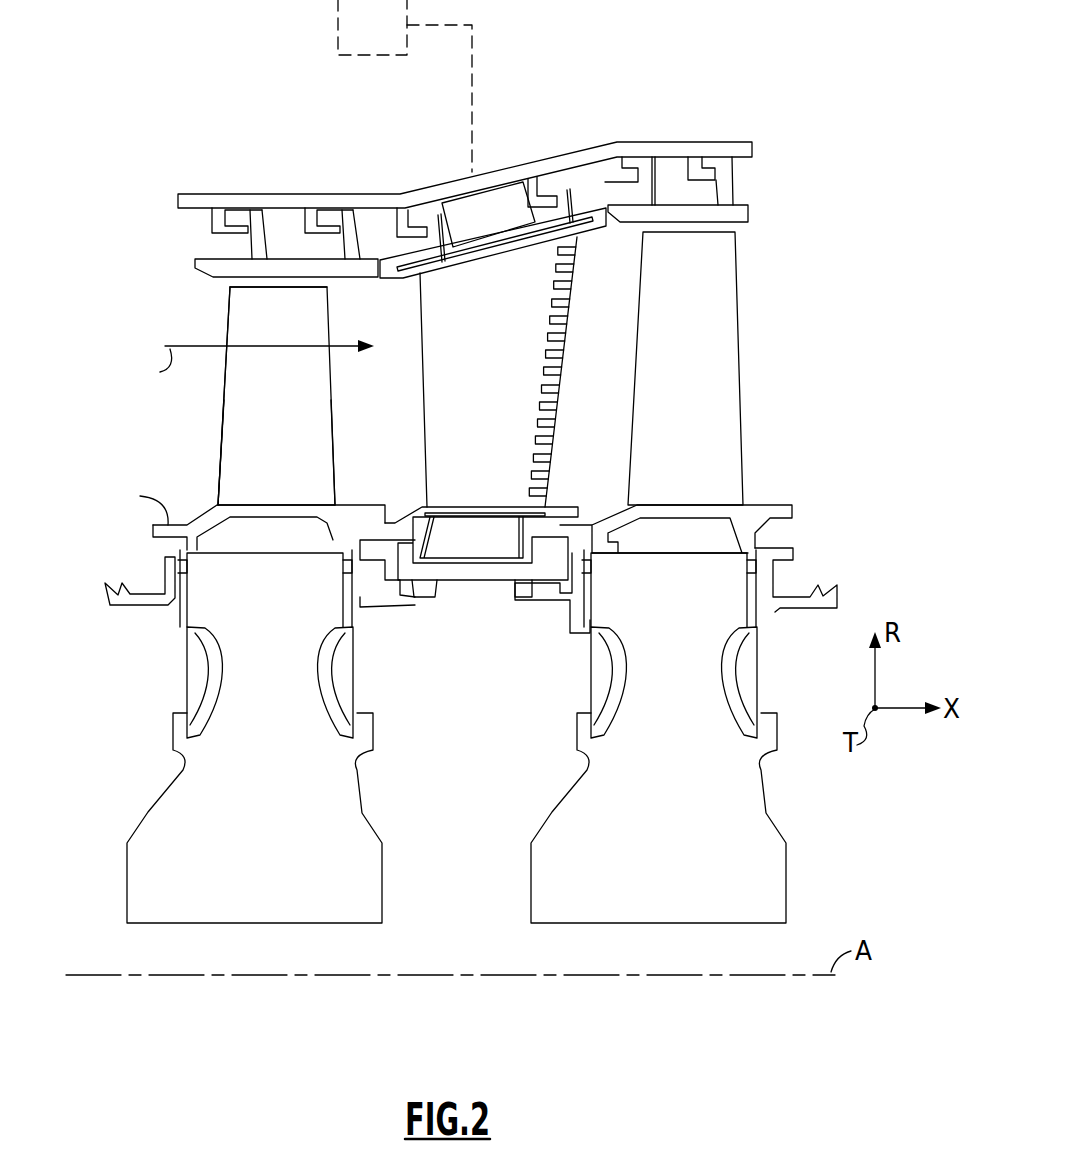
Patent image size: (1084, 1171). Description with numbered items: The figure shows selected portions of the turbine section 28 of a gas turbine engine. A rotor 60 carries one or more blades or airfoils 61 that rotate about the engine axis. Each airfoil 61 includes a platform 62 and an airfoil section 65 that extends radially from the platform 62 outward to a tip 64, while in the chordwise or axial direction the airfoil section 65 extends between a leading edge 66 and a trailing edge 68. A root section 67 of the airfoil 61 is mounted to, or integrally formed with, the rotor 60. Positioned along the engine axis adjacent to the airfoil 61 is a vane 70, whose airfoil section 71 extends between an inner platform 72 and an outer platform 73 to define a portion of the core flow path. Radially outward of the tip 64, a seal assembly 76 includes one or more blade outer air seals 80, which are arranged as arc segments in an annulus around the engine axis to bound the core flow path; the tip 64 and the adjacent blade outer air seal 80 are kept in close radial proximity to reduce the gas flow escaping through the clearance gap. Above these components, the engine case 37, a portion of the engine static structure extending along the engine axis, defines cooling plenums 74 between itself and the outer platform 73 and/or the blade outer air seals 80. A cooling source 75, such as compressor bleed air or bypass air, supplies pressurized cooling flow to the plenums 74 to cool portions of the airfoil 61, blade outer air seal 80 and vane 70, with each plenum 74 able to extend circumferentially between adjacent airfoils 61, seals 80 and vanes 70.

The turbine section 28 is at (99, 128).
The engine case 37 is at (235, 192).
The rotor 60 is at (140, 810).
The airfoil 61 is at (345, 392).
The platform 62 is at (170, 500).
The tip 64 is at (248, 270).
The airfoil section 65 is at (255, 404).
The leading edge 66 is at (218, 448).
The root section 67 is at (205, 598).
The trailing edge 68 is at (335, 452).
The vane 70 is at (577, 352).
The airfoil section 71 is at (512, 445).
The inner platform 72 is at (565, 505).
The outer platform 73 is at (587, 221).
The cooling plenum 74 is at (281, 233).
The cooling source 75 is at (389, 41).
The seal assembly 76 is at (588, 116).
The blade outer air seal 80 is at (182, 262).